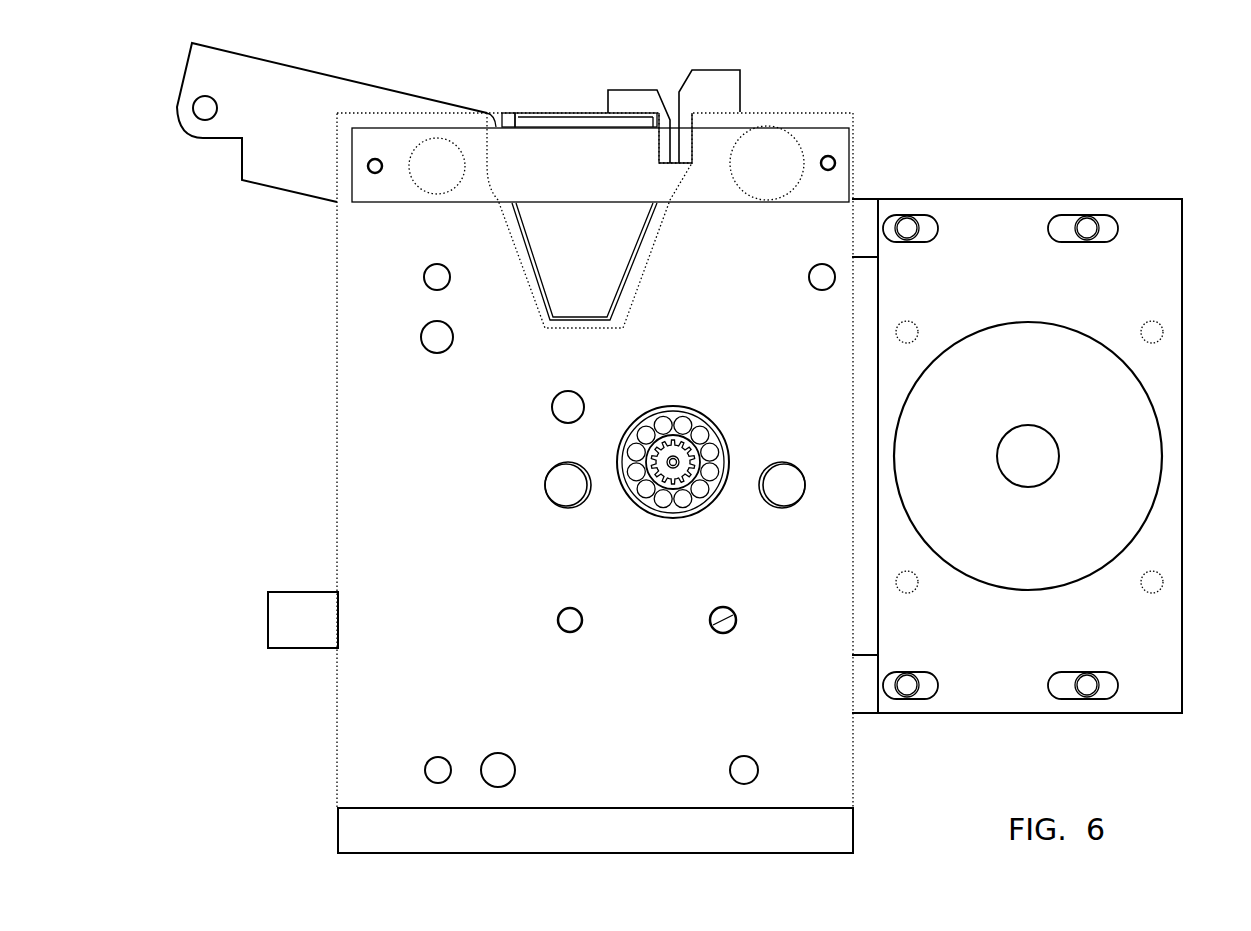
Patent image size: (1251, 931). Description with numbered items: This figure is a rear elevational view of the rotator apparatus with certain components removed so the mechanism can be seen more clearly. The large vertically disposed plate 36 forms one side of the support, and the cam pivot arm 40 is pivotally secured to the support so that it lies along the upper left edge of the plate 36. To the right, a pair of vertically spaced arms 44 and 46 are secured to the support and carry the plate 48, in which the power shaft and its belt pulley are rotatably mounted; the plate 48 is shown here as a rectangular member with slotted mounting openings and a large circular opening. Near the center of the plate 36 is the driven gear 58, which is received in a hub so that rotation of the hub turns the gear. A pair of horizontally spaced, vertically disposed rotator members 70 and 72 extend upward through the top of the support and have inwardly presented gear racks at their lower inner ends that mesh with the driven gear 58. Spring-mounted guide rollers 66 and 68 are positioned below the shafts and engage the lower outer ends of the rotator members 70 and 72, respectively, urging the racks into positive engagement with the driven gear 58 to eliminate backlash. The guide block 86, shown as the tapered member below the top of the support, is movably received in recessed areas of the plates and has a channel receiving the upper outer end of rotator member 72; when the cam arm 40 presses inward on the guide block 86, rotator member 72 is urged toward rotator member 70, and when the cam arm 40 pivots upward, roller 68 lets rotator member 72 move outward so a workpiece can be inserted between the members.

The plate 36 is at (424, 486).
The cam pivot arm 40 is at (308, 85).
The arm 44 is at (870, 210).
The arm 46 is at (862, 705).
The plate 48 is at (1157, 252).
The driven gear 58 is at (683, 450).
The guide roller 66 is at (778, 487).
The guide roller 68 is at (560, 488).
The rotator member 70 is at (735, 83).
The rotator member 72 is at (603, 100).
The guide block 86 is at (615, 263).